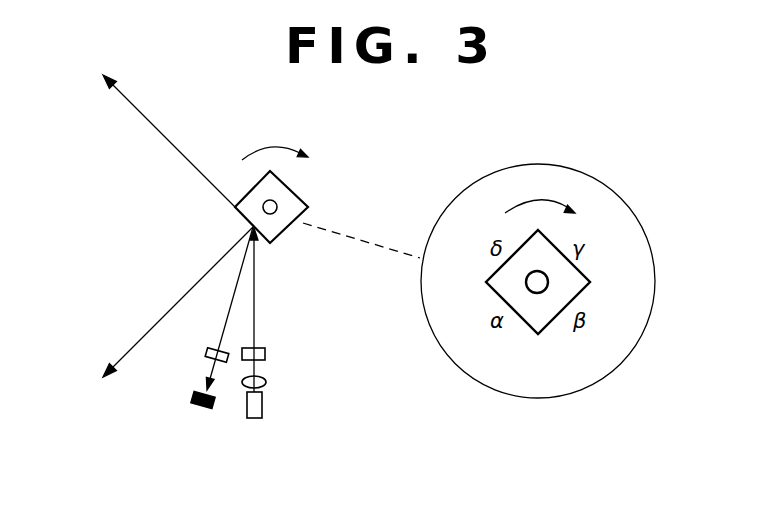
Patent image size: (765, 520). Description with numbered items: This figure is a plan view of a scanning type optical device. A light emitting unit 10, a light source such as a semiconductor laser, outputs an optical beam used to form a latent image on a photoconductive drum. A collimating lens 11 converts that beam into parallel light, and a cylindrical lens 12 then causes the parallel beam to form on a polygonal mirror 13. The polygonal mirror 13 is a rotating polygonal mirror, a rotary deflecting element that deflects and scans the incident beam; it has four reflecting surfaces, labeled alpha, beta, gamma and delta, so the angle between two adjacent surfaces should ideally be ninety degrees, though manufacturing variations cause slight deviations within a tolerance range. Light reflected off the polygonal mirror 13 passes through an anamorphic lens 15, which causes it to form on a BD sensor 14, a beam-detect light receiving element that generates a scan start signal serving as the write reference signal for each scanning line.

The light emitting unit 10 is at (262, 410).
The collimating lens 11 is at (267, 382).
The cylindrical lens 12 is at (267, 353).
The polygonal mirror 13 is at (303, 200).
The BD sensor 14 is at (200, 407).
The anamorphic lens 15 is at (207, 360).